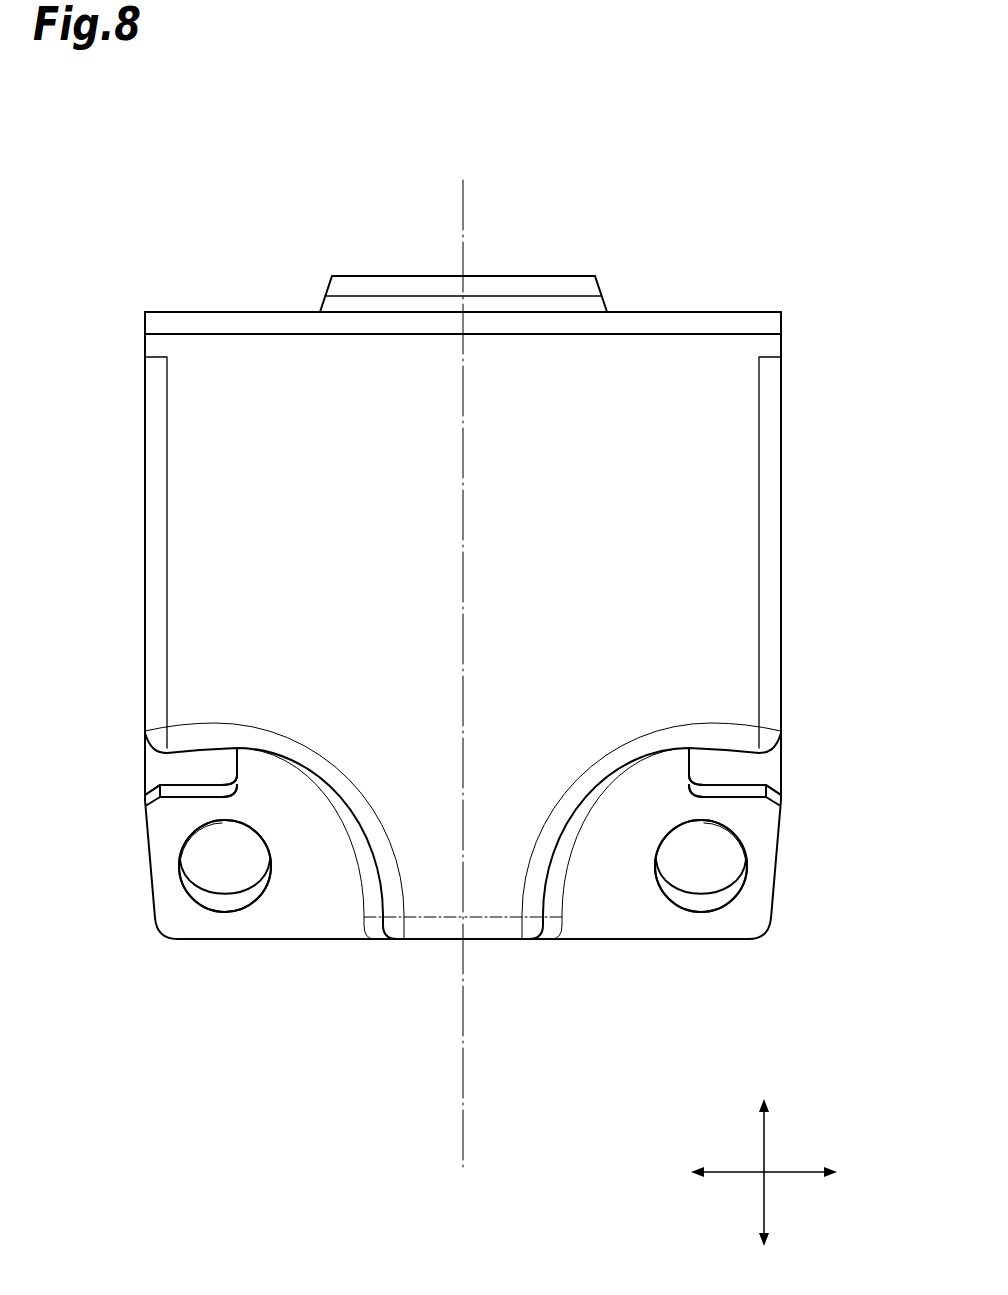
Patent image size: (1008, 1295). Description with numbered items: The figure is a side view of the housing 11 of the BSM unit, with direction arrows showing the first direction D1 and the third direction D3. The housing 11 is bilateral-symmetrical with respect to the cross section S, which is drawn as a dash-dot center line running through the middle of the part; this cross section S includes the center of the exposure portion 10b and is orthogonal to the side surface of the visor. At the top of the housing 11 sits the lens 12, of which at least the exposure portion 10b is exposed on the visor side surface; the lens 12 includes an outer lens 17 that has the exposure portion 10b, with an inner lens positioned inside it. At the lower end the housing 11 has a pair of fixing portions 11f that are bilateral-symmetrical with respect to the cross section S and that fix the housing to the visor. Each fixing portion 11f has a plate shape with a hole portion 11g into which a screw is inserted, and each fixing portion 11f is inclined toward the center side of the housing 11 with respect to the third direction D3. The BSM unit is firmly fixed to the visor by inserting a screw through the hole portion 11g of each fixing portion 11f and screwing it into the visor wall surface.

The housing 11 is at (465, 555).
The fixing portion 11f is at (191, 826).
The hole portion 11g is at (180, 866).
The lens 12 is at (587, 303).
The outer lens 17 is at (532, 268).
The exposure portion 10b is at (533, 285).
The cross section S is at (463, 228).
The first direction D1 is at (731, 1177).
The third direction D3 is at (765, 1135).